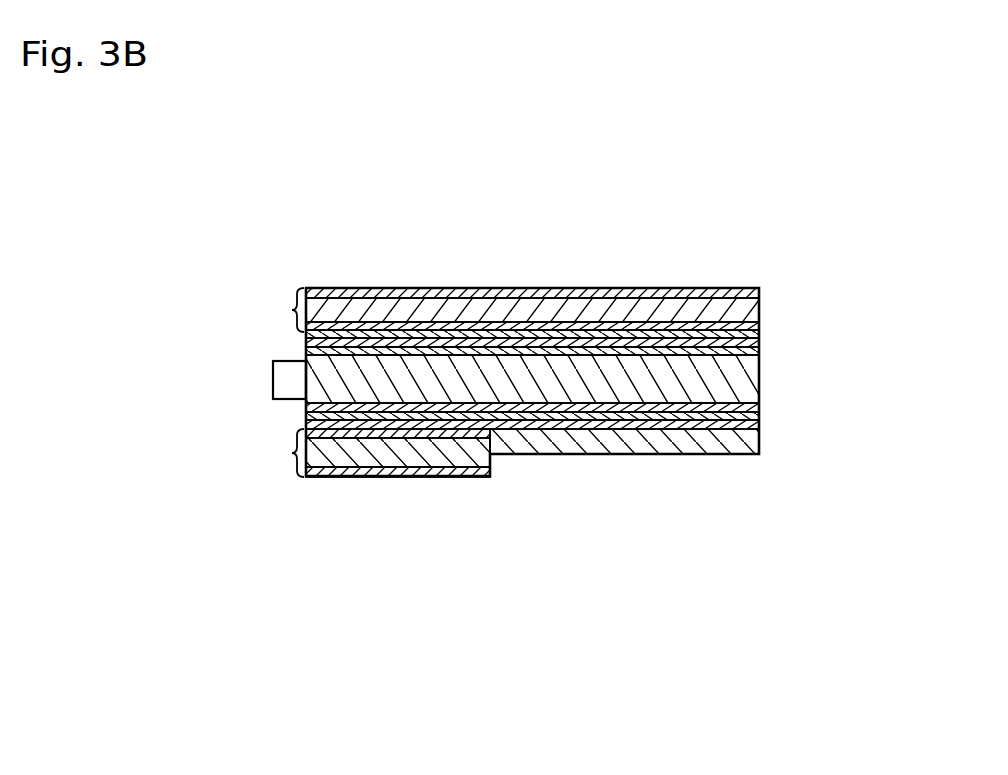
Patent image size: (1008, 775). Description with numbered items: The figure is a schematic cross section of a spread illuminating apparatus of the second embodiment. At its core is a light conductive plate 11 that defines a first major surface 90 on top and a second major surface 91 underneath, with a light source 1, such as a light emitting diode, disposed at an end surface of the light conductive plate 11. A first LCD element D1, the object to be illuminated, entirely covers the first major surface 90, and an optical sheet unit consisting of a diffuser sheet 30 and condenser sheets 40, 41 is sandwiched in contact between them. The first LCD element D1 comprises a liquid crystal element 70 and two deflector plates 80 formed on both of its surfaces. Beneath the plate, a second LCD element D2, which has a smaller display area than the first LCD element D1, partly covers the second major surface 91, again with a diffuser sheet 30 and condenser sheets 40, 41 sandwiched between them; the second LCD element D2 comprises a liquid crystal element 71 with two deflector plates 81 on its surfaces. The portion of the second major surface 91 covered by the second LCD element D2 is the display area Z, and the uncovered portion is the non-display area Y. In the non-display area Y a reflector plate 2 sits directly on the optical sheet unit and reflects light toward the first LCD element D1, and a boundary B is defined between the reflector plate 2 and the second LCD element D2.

The light source 1 is at (284, 377).
The reflector plate 2 is at (766, 445).
The light conductive plate 11 is at (762, 385).
The diffuser sheet 30 is at (762, 352).
The condenser sheet 40 is at (762, 343).
The condenser sheet 41 is at (762, 334).
The liquid crystal element 70 is at (762, 304).
The liquid crystal element 71 is at (428, 450).
The deflector plate 80 is at (752, 293).
The deflector plate 81 is at (326, 438).
The first major surface 90 is at (606, 358).
The second major surface 91 is at (509, 401).
The boundary B is at (486, 483).
The first LCD element D1 is at (292, 310).
The second LCD element D2 is at (292, 453).
The non-display area Y is at (762, 498).
The display area Z is at (493, 537).